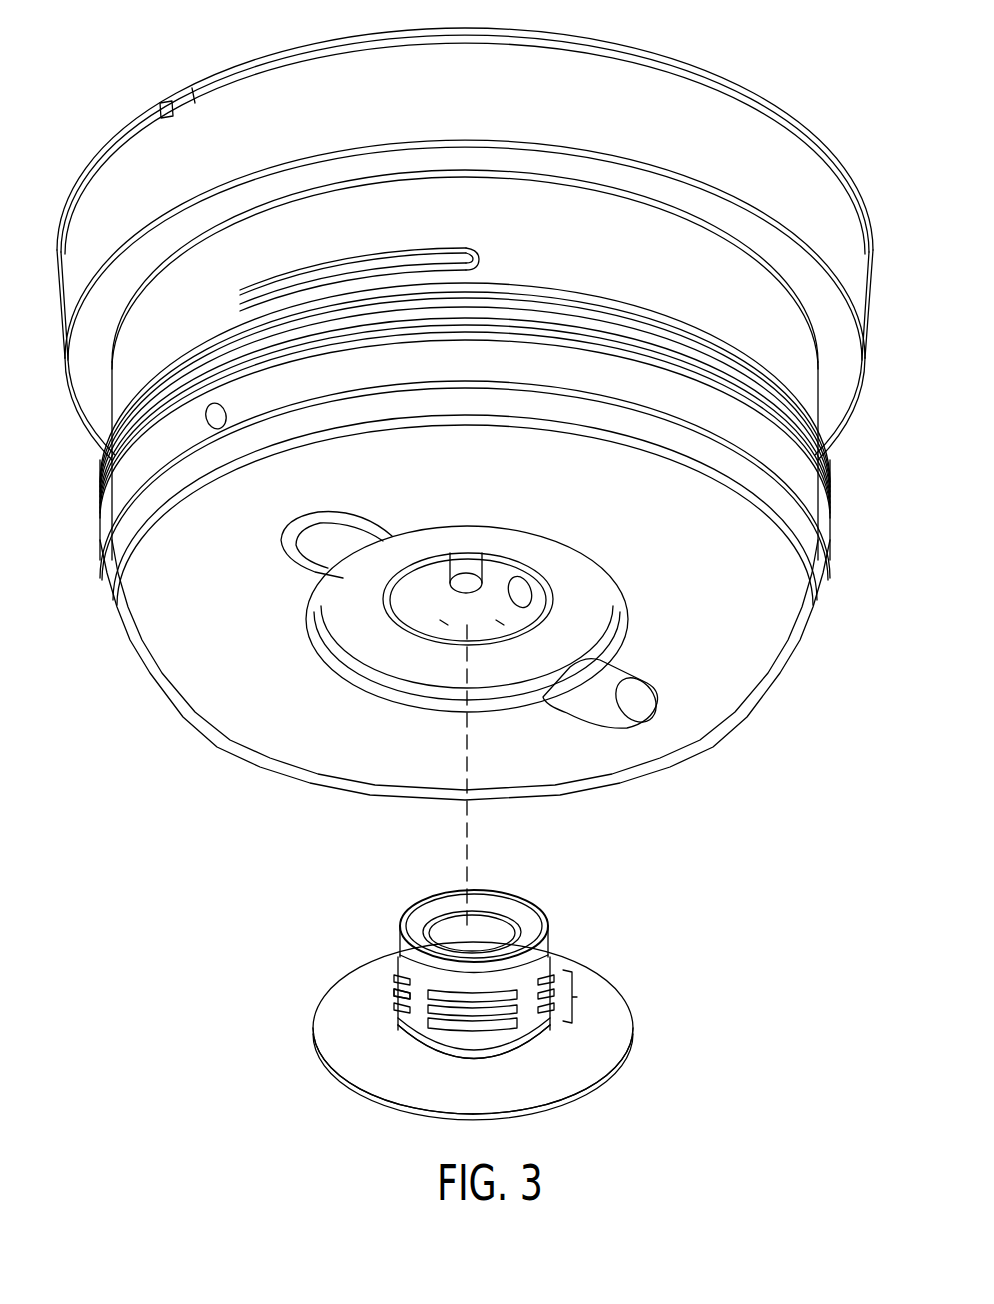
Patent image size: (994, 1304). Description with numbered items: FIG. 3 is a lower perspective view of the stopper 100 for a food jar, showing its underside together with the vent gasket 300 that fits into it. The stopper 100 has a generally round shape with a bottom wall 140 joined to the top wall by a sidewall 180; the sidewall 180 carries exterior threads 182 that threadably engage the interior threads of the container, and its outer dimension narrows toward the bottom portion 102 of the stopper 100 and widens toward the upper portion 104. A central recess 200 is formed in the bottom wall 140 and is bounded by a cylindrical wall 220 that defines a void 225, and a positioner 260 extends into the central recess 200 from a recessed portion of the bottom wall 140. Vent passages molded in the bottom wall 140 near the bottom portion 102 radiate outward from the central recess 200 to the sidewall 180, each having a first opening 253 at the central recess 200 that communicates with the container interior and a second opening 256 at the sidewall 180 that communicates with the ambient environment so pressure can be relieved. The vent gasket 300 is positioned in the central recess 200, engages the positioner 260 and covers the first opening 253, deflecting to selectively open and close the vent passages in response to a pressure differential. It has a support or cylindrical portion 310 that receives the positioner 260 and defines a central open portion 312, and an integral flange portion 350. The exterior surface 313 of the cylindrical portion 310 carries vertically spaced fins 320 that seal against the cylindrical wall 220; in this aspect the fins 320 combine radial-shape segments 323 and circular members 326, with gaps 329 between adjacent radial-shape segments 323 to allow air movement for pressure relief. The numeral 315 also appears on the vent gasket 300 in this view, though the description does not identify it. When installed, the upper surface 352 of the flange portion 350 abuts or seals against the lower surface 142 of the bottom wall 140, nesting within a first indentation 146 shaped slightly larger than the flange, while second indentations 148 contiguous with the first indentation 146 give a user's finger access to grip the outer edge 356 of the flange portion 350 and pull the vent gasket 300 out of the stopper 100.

The stopper 100 is at (838, 98).
The bottom portion 102 is at (783, 560).
The upper portion 104 is at (848, 242).
The bottom wall 140 is at (777, 673).
The lower surface 142 is at (735, 712).
The first indentation 146 is at (593, 603).
The second indentations 148 is at (627, 710).
The sidewall 180 is at (805, 383).
The exterior threads 182 is at (830, 510).
The central recess 200 is at (426, 608).
The cylindrical wall 220 is at (500, 625).
The void 225 is at (437, 625).
The first opening 253 is at (517, 590).
The second opening 256 is at (205, 423).
The positioner 260 is at (453, 575).
The vent gasket 300 is at (633, 1056).
The cylindrical portion 310 is at (405, 918).
The central open portion 312 is at (493, 920).
The exterior surface 313 is at (403, 960).
The top surface 315 is at (433, 900).
The fins 320 is at (579, 997).
The radial-shape segments 323 is at (393, 995).
The circular members 326 is at (420, 1033).
The gaps 329 is at (420, 1010).
The flange portion 350 is at (412, 1090).
The upper surface 352 is at (527, 1090).
The outer edge 356 is at (630, 1002).